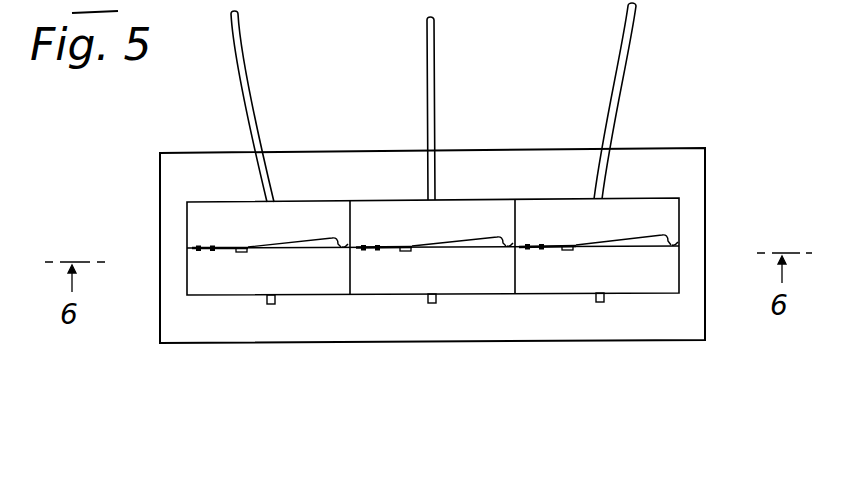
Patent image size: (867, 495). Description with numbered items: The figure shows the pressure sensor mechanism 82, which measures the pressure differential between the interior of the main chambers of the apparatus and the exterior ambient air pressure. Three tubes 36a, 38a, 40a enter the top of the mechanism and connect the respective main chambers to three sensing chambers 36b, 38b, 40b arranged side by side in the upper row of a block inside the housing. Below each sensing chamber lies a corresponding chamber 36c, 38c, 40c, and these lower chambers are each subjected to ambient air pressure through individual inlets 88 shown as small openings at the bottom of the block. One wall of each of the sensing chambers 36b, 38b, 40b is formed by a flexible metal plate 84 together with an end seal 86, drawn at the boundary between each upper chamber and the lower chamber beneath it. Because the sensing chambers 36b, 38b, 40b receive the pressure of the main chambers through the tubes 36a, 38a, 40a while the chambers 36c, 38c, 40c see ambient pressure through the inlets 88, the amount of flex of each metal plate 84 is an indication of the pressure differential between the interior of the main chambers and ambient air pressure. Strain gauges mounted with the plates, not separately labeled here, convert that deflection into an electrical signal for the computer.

The pressure sensor mechanism 82 is at (152, 153).
The tube 36a is at (237, 28).
The tube 38a is at (436, 33).
The tube 40a is at (636, 27).
The chamber 36b is at (240, 230).
The chamber 36c is at (238, 282).
The chamber 38b is at (405, 228).
The chamber 38c is at (403, 280).
The chamber 40b is at (570, 226).
The chamber 40c is at (568, 278).
The flexible metal plate 84 is at (320, 238).
The end seal 86 is at (342, 249).
The inlet 88 is at (264, 305).